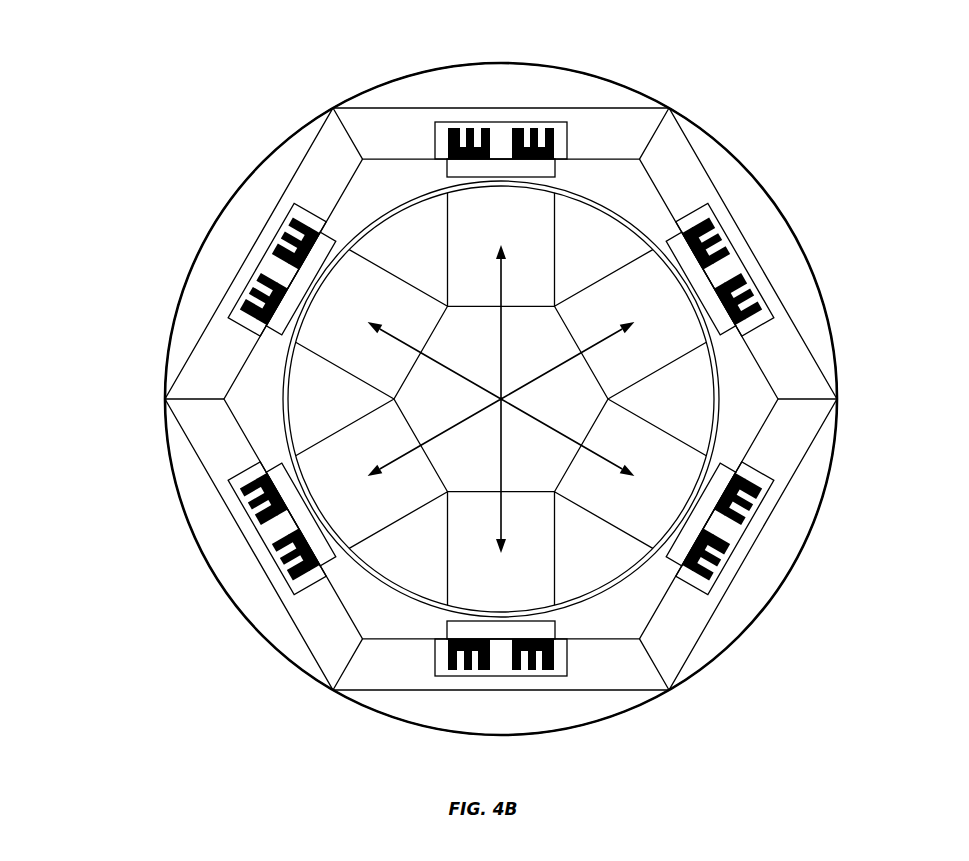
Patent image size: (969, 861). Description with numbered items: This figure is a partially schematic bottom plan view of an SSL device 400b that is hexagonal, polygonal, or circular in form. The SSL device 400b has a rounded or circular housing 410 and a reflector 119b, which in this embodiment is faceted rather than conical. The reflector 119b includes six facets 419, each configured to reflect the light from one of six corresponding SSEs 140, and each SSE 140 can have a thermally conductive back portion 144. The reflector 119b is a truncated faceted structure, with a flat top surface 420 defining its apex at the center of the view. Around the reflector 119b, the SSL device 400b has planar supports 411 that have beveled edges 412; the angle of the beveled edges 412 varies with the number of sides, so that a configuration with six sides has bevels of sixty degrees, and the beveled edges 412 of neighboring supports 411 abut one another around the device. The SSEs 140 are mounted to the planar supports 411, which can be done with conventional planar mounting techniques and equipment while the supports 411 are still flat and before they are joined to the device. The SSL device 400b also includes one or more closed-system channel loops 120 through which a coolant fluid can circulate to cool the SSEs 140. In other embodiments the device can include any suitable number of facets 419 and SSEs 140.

The SSL device 400b is at (157, 569).
The housing 410 is at (783, 213).
The planar support 411 is at (697, 612).
The beveled edges 412 is at (838, 402).
The facets 419 is at (377, 358).
The flat top surface 420 is at (537, 455).
The reflector 119b is at (434, 519).
The closed-system channel loops 120 is at (560, 138).
The SSEs 140 is at (322, 251).
The thermally conductive back portion 144 is at (472, 130).